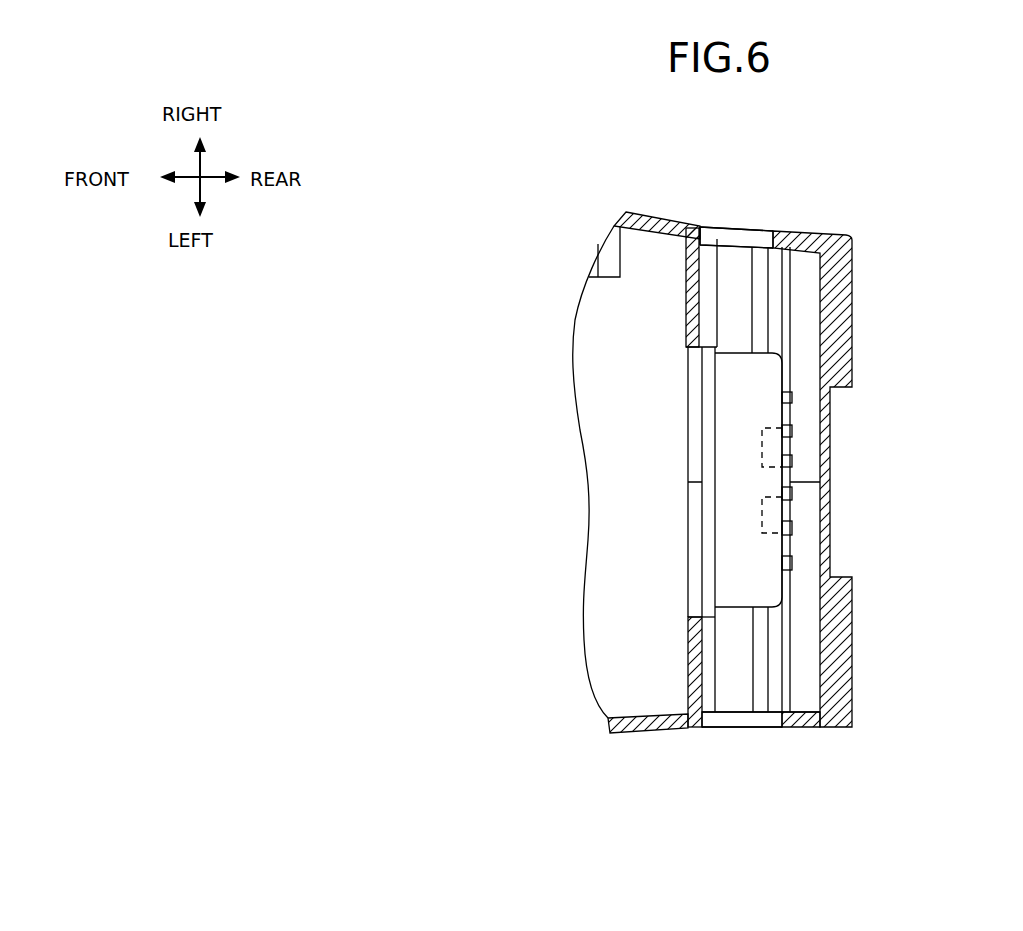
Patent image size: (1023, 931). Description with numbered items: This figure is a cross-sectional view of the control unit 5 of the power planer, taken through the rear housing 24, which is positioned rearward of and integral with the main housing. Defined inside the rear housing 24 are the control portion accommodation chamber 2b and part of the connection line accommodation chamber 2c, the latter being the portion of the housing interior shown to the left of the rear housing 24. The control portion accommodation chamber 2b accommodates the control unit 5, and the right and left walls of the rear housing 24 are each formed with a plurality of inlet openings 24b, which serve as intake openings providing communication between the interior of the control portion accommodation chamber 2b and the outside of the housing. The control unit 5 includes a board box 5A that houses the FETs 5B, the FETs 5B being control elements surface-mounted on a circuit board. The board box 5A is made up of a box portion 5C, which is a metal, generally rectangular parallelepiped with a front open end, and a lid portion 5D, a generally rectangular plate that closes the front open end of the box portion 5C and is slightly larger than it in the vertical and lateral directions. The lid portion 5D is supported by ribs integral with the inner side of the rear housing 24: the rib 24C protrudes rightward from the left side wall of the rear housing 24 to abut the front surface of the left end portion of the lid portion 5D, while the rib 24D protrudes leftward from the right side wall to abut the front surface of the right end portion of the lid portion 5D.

The control portion accommodation chamber 2b is at (730, 290).
The connection line accommodation chamber 2c is at (620, 313).
The control unit 5 is at (782, 380).
The board box 5A is at (588, 529).
The FETs 5B is at (770, 427).
The box portion 5C is at (735, 453).
The lid portion 5D is at (705, 413).
The rear housing 24 is at (838, 677).
The inlet openings 24b is at (707, 230).
The rib 24C is at (692, 667).
The rib 24D is at (690, 277).